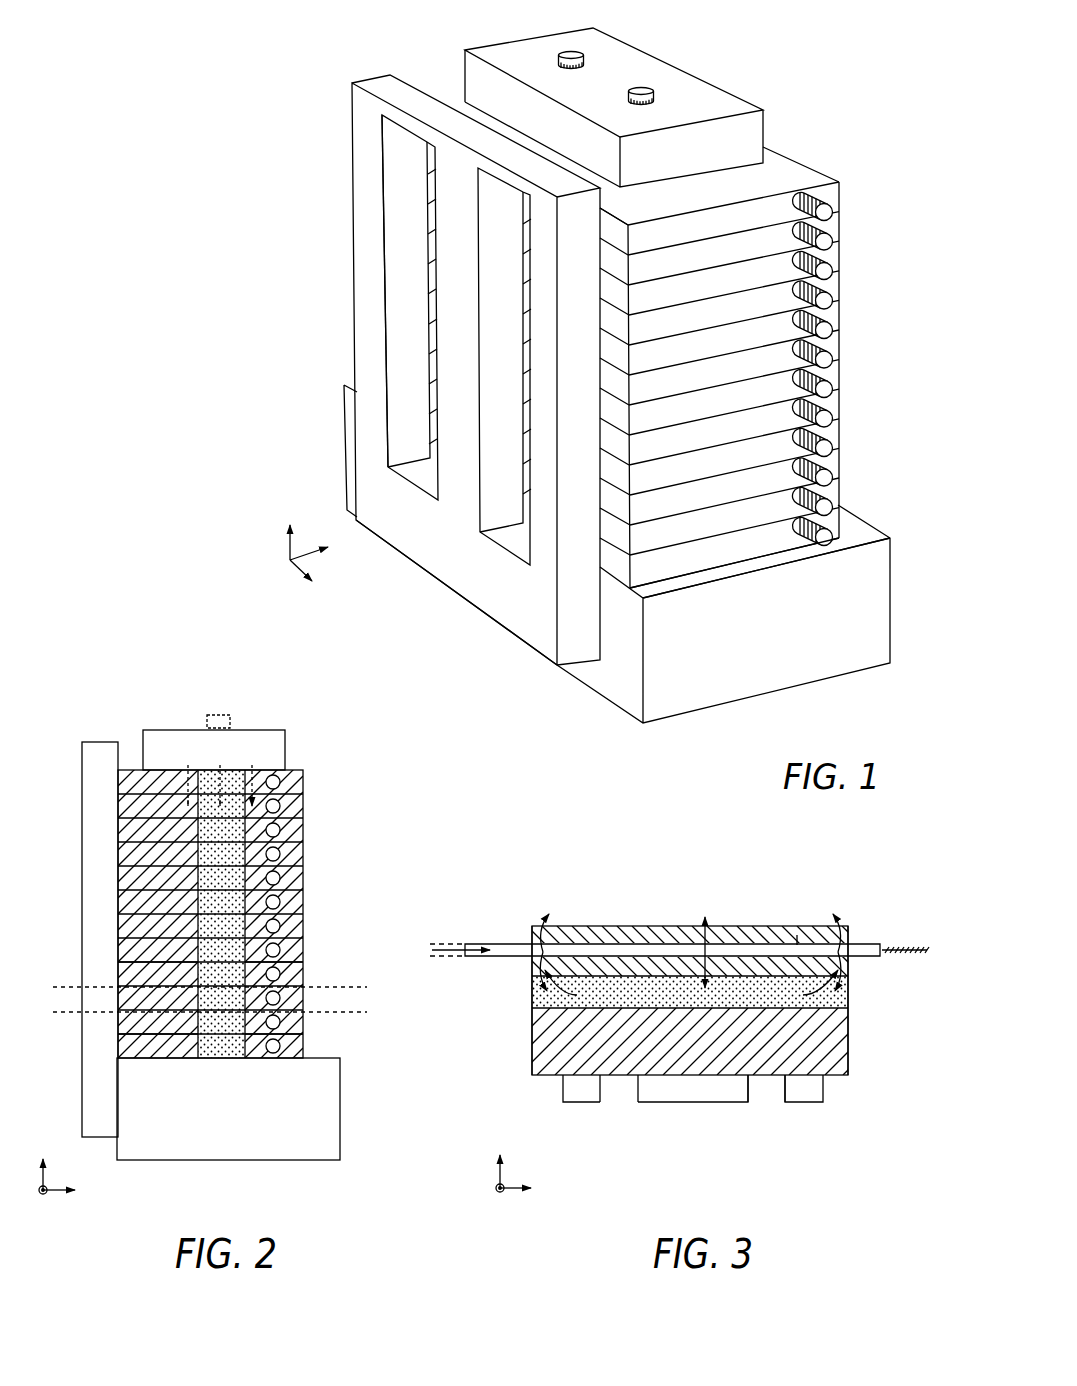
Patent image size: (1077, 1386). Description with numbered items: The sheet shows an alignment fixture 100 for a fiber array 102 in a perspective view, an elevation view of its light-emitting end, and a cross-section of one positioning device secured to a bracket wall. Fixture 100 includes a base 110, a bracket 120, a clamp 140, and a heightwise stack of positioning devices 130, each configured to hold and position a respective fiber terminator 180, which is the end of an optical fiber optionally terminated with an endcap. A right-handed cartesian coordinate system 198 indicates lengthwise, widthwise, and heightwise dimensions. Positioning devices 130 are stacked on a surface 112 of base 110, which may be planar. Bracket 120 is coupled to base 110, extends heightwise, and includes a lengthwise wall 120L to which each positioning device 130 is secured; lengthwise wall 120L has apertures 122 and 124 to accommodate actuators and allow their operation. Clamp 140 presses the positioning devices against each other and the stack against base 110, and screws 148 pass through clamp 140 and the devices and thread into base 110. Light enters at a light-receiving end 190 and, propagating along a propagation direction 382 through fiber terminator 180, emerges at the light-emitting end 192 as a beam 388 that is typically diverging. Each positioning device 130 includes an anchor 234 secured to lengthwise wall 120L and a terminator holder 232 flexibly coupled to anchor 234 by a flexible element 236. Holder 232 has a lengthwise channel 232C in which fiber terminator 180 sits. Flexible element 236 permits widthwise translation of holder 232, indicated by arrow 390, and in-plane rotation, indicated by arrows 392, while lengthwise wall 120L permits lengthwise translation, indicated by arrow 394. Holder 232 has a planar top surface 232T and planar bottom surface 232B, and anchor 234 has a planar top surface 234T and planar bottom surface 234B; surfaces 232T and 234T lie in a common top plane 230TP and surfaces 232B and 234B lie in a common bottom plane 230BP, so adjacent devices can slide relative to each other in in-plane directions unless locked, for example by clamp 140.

In FIG. 1, the alignment fixture 100 is at (299, 29).
In FIG. 2, the alignment fixture 100 is at (87, 641).
In FIG. 1, the fiber array 102 is at (579, 401).
In FIG. 1, the base 110 is at (890, 620).
In FIG. 2, the base 110 is at (228, 1109).
In FIG. 1, the surface of base 112 is at (835, 524).
In FIG. 1, the bracket 120 is at (444, 372).
In FIG. 1, the lengthwise wall 120L is at (437, 582).
In FIG. 2, the lengthwise wall 120L is at (80, 851).
In FIG. 3, the lengthwise wall 120L is at (824, 1086).
In FIG. 1, the aperture 122 is at (412, 420).
In FIG. 3, the aperture 122 is at (618, 1100).
In FIG. 1, the aperture 124 is at (507, 493).
In FIG. 3, the aperture 124 is at (767, 1100).
In FIG. 1, the positioning device 130 is at (755, 353).
In FIG. 2, the positioning device 130 is at (199, 914).
In FIG. 3, the positioning device 130 is at (692, 993).
In FIG. 1, the clamp 140 is at (641, 107).
In FIG. 2, the clamp 140 is at (214, 725).
In FIG. 1, the screw 148 is at (655, 90).
In FIG. 2, the screw 148 is at (218, 713).
In FIG. 1, the fiber terminator 180 is at (826, 197).
In FIG. 3, the fiber terminator 180 is at (508, 958).
In FIG. 1, the light-receiving end 190 is at (344, 322).
In FIG. 3, the light-receiving end 190 is at (515, 933).
In FIG. 1, the light-emitting end 192 is at (728, 527).
In FIG. 3, the light-emitting end 192 is at (866, 933).
In FIG. 1, the cartesian coordinate system 198 is at (266, 560).
In FIG. 2, the cartesian coordinate system 198 is at (60, 1214).
In FIG. 3, the cartesian coordinate system 198 is at (502, 1204).
In FIG. 2, the top plane 230TP is at (72, 987).
In FIG. 2, the bottom plane 230BP is at (72, 1012).
In FIG. 2, the terminator holder 232 is at (294, 768).
In FIG. 3, the terminator holder 232 is at (788, 925).
In FIG. 2, the lengthwise channel 232C is at (272, 772).
In FIG. 3, the lengthwise channel 232C is at (797, 935).
In FIG. 2, the top surface of holder 232T is at (290, 980).
In FIG. 2, the bottom surface of holder 232B is at (290, 1015).
In FIG. 2, the anchor 234 is at (133, 768).
In FIG. 3, the anchor 234 is at (851, 1042).
In FIG. 2, the top surface of anchor 234T is at (145, 981).
In FIG. 2, the bottom surface of anchor 234B is at (145, 1015).
In FIG. 2, the flexible element 236 is at (208, 768).
In FIG. 3, the flexible element 236 is at (853, 998).
In FIG. 3, the propagation direction 382 is at (463, 957).
In FIG. 3, the beam 388 is at (903, 950).
In FIG. 3, the arrow 390 is at (700, 935).
In FIG. 3, the arrows 392 is at (691, 996).
In FIG. 3, the arrow 394 is at (696, 1047).